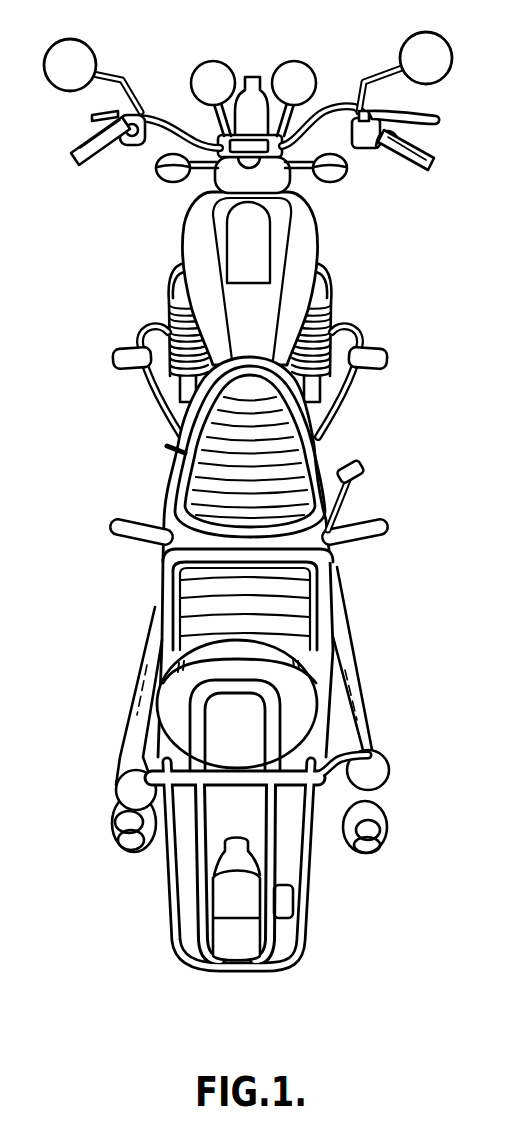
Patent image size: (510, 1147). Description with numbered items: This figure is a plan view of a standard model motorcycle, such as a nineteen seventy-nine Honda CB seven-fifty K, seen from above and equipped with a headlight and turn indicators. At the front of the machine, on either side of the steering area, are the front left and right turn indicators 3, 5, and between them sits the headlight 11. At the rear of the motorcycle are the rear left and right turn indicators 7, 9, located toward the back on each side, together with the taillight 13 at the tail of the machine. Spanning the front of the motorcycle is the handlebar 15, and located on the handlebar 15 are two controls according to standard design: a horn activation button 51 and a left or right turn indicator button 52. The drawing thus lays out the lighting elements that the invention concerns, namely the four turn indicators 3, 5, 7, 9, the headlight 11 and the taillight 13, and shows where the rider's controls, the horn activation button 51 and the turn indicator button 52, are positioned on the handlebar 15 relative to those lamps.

The front left turn indicator 3 is at (172, 172).
The front right turn indicator 5 is at (331, 172).
The rear left turn indicator 7 is at (135, 790).
The rear right turn indicator 9 is at (368, 770).
The headlight 11 is at (325, 100).
The taillight 13 is at (230, 898).
The handlebar 15 is at (160, 113).
The horn activation button 51 is at (130, 150).
The left or right turn indicator button 52 is at (128, 118).